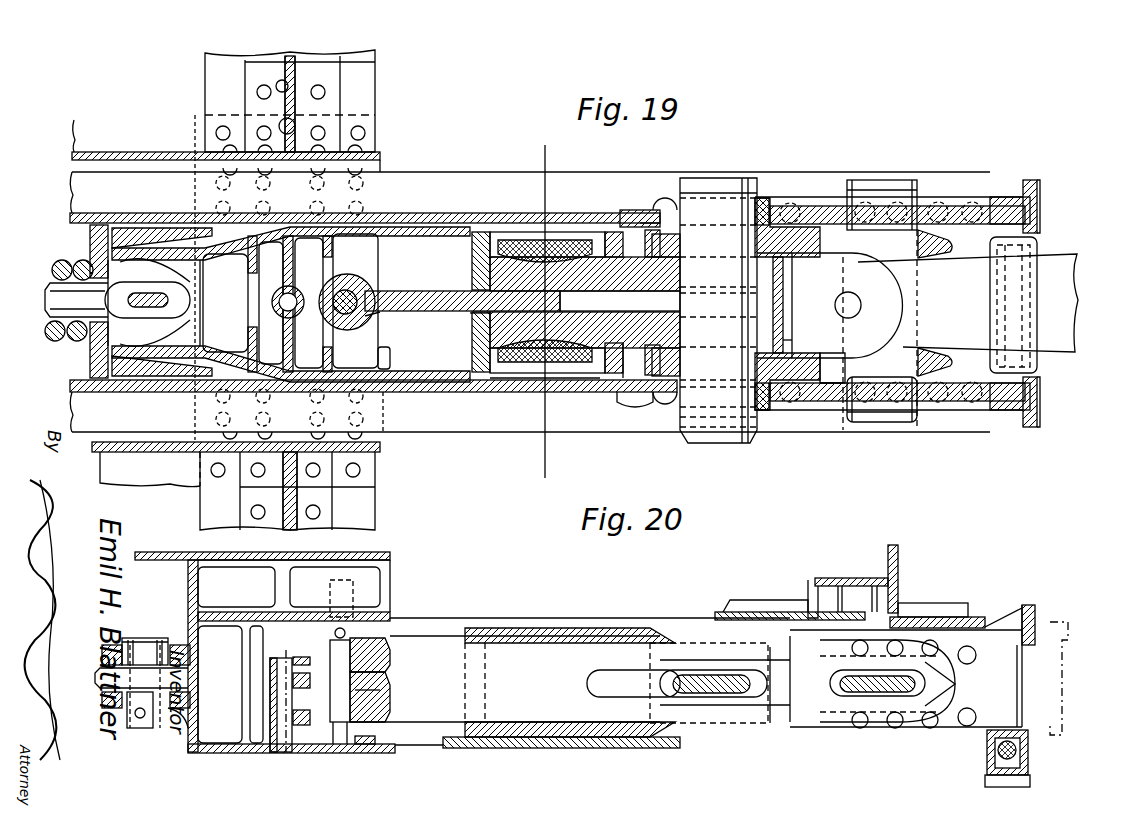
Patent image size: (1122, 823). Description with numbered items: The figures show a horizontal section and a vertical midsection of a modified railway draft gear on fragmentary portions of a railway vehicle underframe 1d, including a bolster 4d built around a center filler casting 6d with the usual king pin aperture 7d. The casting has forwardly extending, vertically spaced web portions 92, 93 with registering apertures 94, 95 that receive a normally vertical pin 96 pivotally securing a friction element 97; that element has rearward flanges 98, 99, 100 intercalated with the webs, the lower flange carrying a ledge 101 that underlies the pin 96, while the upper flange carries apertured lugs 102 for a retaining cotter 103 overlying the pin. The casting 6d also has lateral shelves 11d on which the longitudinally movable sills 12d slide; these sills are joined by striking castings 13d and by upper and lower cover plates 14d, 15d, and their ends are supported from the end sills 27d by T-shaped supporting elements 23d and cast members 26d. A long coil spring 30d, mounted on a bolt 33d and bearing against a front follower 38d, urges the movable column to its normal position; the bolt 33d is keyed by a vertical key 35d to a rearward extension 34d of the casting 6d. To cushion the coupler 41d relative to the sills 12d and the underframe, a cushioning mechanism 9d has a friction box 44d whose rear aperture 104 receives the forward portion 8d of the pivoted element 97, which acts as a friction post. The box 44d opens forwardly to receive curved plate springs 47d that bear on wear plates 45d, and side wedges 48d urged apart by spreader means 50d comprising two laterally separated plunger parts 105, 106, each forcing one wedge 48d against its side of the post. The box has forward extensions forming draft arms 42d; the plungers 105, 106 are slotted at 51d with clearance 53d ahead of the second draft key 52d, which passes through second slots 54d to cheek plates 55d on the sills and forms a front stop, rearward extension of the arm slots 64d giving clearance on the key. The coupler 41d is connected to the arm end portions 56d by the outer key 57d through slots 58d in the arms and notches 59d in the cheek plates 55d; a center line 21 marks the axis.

In FIG. 19, the railway vehicle underframe 1d is at (367, 103).
In FIG. 19, the bolster 4d is at (207, 100).
In FIG. 19, the center filler casting 6d is at (222, 262).
In FIG. 20, the center filler casting 6d is at (385, 576).
In FIG. 19, the king pin aperture 7d is at (272, 302).
In FIG. 20, the king pin aperture 7d is at (285, 752).
In FIG. 19, the forward portion of pivoted member 8d is at (430, 300).
In FIG. 19, the cushioning mechanism 9d is at (620, 402).
In FIG. 19, the side portions or shelves 11d is at (392, 175).
In FIG. 19, the movable sills 12d is at (450, 185).
In FIG. 19, the striking castings 13d is at (1032, 196).
In FIG. 20, the striking castings 13d is at (1030, 608).
In FIG. 20, the upper cover plate 14d is at (722, 612).
In FIG. 20, the lower cover plate 15d is at (575, 748).
In FIG. 19, the center line 21 is at (545, 307).
In FIG. 20, the T-shaped supporting elements 23d is at (950, 605).
In FIG. 20, the cast members 26d is at (900, 605).
In FIG. 20, the end sills 27d is at (852, 578).
In FIG. 19, the coil spring 30d is at (55, 341).
In FIG. 19, the bolt or rod 33d is at (52, 287).
In FIG. 20, the bolt or rod 33d is at (100, 712).
In FIG. 19, the rearward extension 34d is at (182, 284).
In FIG. 20, the rearward extension 34d is at (112, 650).
In FIG. 19, the vertical key 35d is at (150, 306).
In FIG. 20, the vertical key 35d is at (150, 642).
In FIG. 19, the front follower 38d is at (92, 370).
In FIG. 19, the coupler 41d is at (1060, 262).
In FIG. 20, the coupler 41d is at (1060, 625).
In FIG. 19, the draft arms 42d is at (785, 230).
In FIG. 20, the draft arms 42d is at (518, 630).
In FIG. 19, the friction box 44d is at (495, 392).
In FIG. 19, the wear plates 45d is at (492, 238).
In FIG. 19, the curved plate springs 47d is at (520, 245).
In FIG. 19, the side wedges 48d is at (490, 280).
In FIG. 19, the spreader means 50d is at (632, 378).
In FIG. 19, the slot 51d is at (762, 340).
In FIG. 20, the slot 51d is at (703, 712).
In FIG. 19, the second draft key 52d is at (725, 185).
In FIG. 20, the second draft key 52d is at (722, 695).
In FIG. 19, the slot clearance 53d is at (762, 272).
In FIG. 20, the slot clearance 53d is at (760, 695).
In FIG. 19, the second slots 54d is at (763, 205).
In FIG. 19, the cheek plates 55d is at (825, 206).
In FIG. 19, the end portions of draft arms 56d is at (945, 252).
In FIG. 20, the end portions of draft arms 56d is at (930, 702).
In FIG. 19, the front or outer key 57d is at (905, 440).
In FIG. 20, the front or outer key 57d is at (877, 695).
In FIG. 19, the slots in draft arms 58d is at (830, 384).
In FIG. 20, the slots in draft arms 58d is at (828, 700).
In FIG. 19, the slots or notches in cheek plates 59d is at (840, 412).
In FIG. 19, the slots in draft arms for second key 64d is at (668, 205).
In FIG. 20, the upper web portion 92 is at (388, 665).
In FIG. 19, the lower web portion 93 is at (345, 338).
In FIG. 20, the lower web portion 93 is at (388, 700).
In FIG. 20, the aperture 94 is at (385, 655).
In FIG. 20, the aperture 95 is at (380, 724).
In FIG. 19, the vertical pin 96 is at (339, 293).
In FIG. 20, the vertical pin 96 is at (340, 724).
In FIG. 19, the friction element 97 is at (412, 316).
In FIG. 20, the friction element 97 is at (440, 724).
In FIG. 20, the upper flange or web 98 is at (296, 657).
In FIG. 19, the flange or web 99 is at (350, 287).
In FIG. 20, the flange or web 99 is at (293, 680).
In FIG. 20, the lower flange 100 is at (293, 715).
In FIG. 20, the ledge or shelf 101 is at (365, 752).
In FIG. 20, the apertured lugs 102 is at (355, 628).
In FIG. 20, the retaining cotter or securing means 103 is at (338, 628).
In FIG. 19, the aperture 104 is at (470, 325).
In FIG. 19, the plunger part 105 is at (648, 215).
In FIG. 19, the plunger part 106 is at (685, 350).